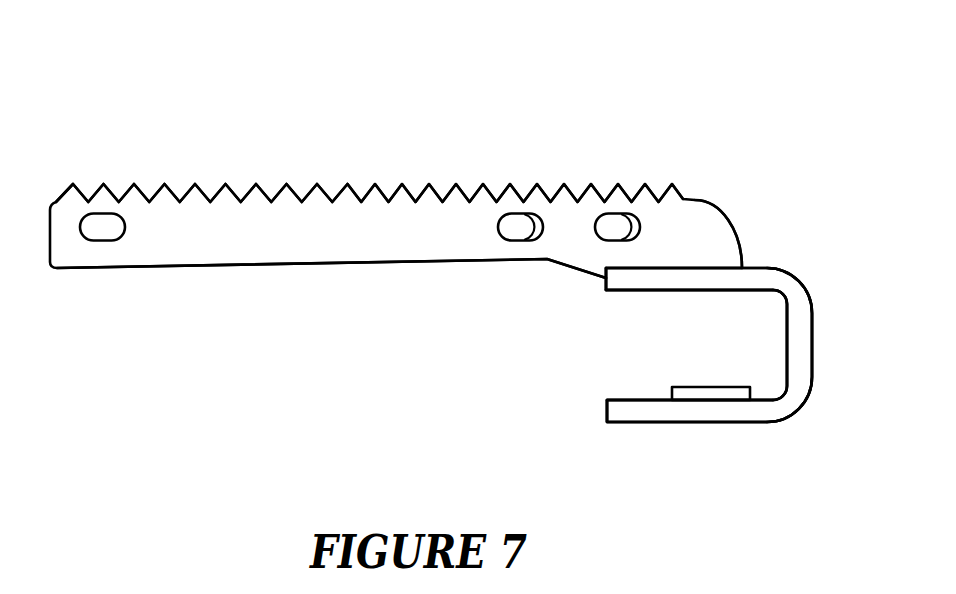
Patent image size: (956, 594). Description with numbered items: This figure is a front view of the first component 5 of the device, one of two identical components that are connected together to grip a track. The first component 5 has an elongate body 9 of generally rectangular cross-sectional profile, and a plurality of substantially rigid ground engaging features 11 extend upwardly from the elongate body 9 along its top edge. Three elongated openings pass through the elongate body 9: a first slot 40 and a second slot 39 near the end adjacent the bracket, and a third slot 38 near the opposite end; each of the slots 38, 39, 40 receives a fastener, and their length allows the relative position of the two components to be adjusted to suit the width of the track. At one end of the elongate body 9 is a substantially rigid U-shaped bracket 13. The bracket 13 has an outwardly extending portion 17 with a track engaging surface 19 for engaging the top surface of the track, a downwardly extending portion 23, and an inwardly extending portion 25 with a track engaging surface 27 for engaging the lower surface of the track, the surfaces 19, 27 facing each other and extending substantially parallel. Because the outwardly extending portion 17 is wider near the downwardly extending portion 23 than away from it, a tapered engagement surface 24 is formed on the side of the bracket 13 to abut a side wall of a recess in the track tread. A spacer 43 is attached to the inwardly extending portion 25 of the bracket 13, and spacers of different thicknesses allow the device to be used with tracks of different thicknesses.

The first component 5 is at (176, 92).
The ground engaging features 11 is at (450, 186).
The elongate body 9 is at (278, 250).
The third slot 38 is at (103, 233).
The second slot 39 is at (517, 230).
The first slot 40 is at (610, 222).
The tapered engagement surface 24 is at (670, 280).
The track engaging surface 19 is at (724, 302).
The U-shaped bracket 13 is at (785, 284).
The downwardly extending portion 23 is at (803, 340).
The outwardly extending portion 17 is at (617, 285).
The track engaging surface 27 is at (637, 400).
The inwardly extending portion 25 is at (647, 410).
The spacer 43 is at (737, 394).